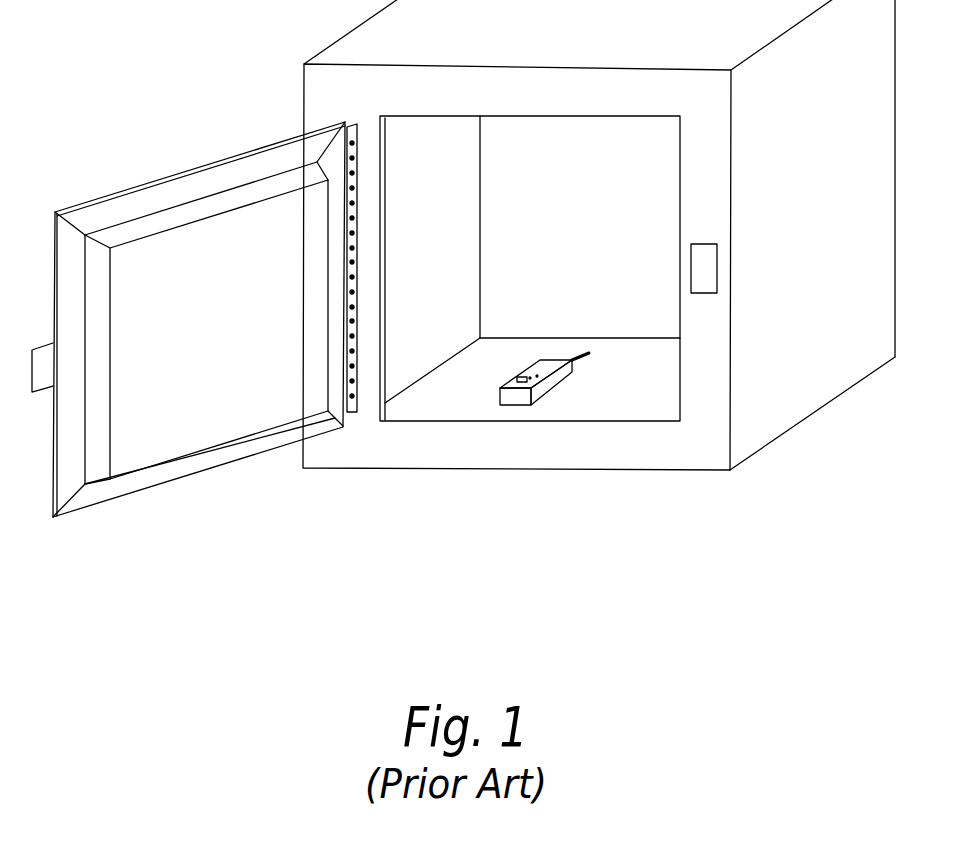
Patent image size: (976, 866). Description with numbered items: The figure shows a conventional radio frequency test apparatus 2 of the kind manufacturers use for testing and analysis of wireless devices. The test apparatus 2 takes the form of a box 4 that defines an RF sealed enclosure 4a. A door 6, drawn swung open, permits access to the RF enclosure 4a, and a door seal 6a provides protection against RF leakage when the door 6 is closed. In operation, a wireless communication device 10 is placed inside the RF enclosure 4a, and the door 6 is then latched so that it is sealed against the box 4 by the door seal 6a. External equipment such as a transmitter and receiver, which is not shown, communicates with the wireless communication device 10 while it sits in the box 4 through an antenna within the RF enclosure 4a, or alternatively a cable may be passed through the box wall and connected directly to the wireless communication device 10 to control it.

The radio frequency test apparatus 2 is at (463, 339).
The box 4 is at (813, 413).
The RF sealed enclosure 4a is at (615, 398).
The door 6 is at (135, 445).
The door seal 6a is at (67, 482).
The wireless communication device 10 is at (517, 405).